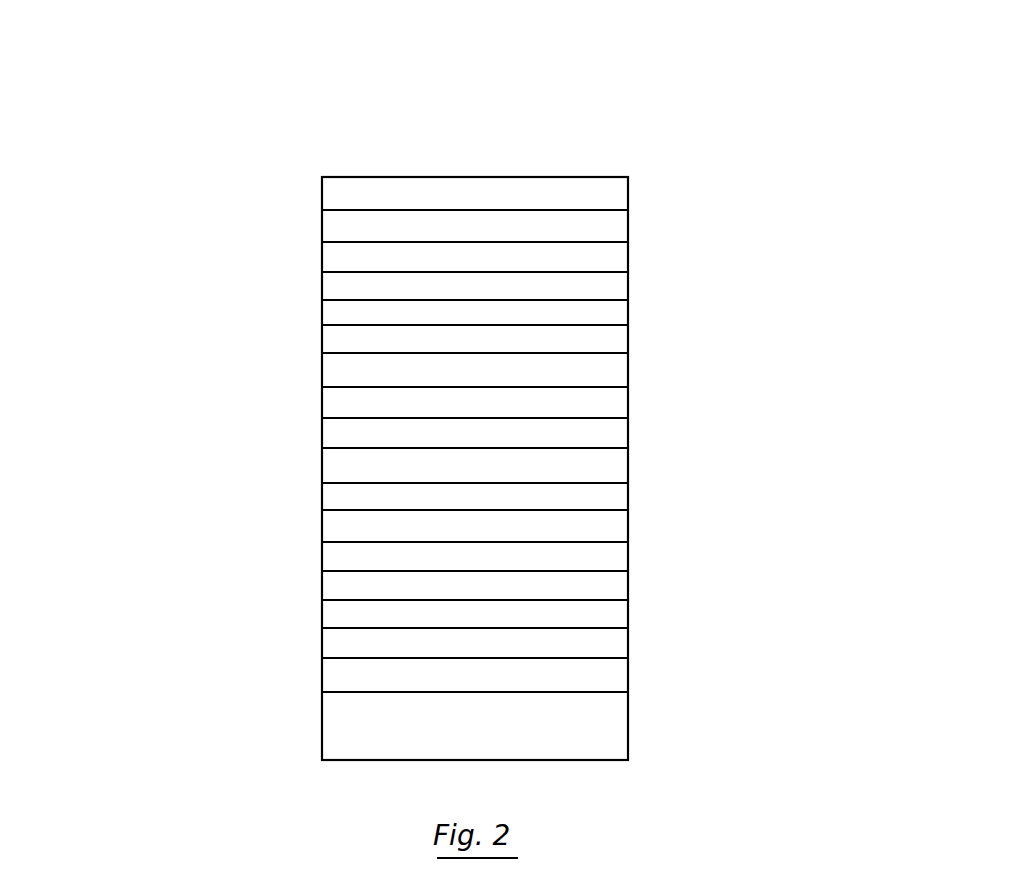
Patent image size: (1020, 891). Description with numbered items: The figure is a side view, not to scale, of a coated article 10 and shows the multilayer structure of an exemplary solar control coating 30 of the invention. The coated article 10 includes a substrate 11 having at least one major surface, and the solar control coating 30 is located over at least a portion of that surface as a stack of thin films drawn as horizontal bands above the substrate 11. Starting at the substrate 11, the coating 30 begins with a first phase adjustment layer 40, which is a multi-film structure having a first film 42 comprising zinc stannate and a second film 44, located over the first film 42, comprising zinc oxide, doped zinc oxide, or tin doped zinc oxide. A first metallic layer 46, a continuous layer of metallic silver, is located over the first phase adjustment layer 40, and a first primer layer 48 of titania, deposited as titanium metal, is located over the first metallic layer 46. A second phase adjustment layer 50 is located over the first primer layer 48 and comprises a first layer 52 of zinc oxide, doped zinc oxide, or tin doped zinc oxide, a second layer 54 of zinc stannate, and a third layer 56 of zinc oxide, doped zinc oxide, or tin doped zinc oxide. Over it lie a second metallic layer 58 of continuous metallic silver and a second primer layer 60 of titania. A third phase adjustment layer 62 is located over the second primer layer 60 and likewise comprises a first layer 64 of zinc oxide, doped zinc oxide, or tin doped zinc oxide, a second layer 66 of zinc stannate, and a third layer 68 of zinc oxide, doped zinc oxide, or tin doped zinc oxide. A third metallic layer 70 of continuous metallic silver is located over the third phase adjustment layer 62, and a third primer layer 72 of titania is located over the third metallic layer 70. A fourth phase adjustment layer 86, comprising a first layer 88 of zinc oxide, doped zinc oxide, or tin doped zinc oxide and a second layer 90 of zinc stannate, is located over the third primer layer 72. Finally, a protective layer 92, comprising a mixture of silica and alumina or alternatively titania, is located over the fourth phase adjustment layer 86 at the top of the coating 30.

The coated article 10 is at (790, 79).
The substrate 11 is at (610, 748).
The solar control coating 30 is at (322, 178).
The first phase adjustment layer 40 is at (322, 698).
The first film 42 is at (617, 688).
The second film 44 is at (617, 655).
The first metallic layer 46 is at (617, 617).
The first primer layer 48 is at (617, 592).
The second phase adjustment layer 50 is at (322, 571).
The first layer of second phase adjustment layer 52 is at (617, 562).
The second layer of second phase adjustment layer 54 is at (617, 535).
The third layer of second phase adjustment layer 56 is at (617, 505).
The second metallic layer 58 is at (617, 470).
The second primer layer 60 is at (617, 440).
The third phase adjustment layer 62 is at (322, 418).
The first layer of third phase adjustment layer 64 is at (617, 410).
The second layer of third phase adjustment layer 66 is at (617, 380).
The third layer of third phase adjustment layer 68 is at (617, 351).
The third metallic layer 70 is at (617, 320).
The third primer layer 72 is at (617, 290).
The fourth phase adjustment layer 86 is at (322, 275).
The first layer of fourth phase adjustment layer 88 is at (617, 260).
The second layer of fourth phase adjustment layer 90 is at (617, 229).
The protective layer 92 is at (617, 197).